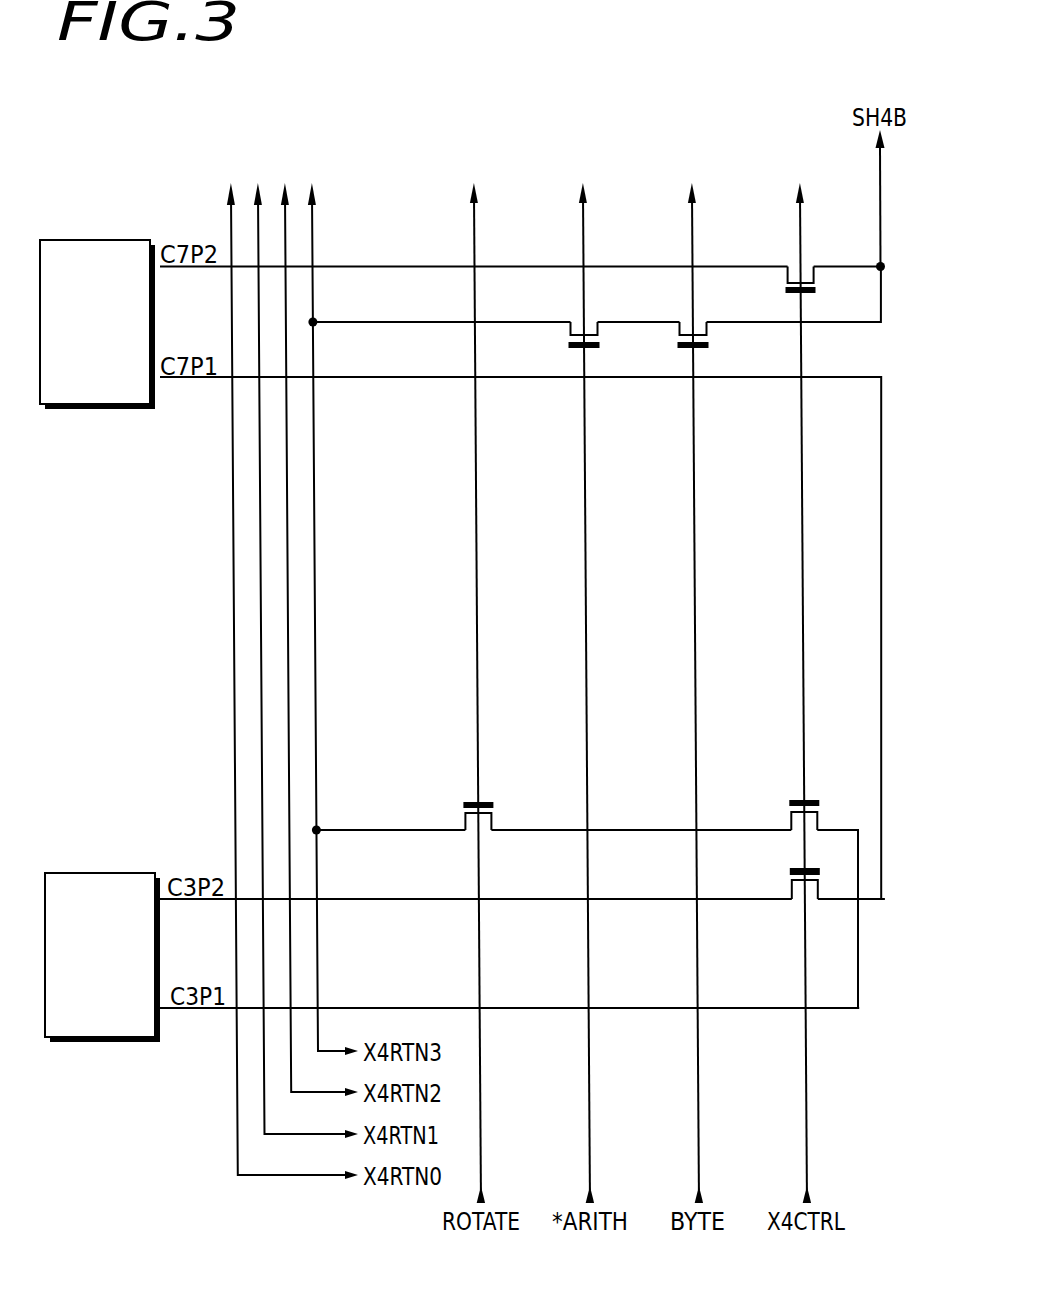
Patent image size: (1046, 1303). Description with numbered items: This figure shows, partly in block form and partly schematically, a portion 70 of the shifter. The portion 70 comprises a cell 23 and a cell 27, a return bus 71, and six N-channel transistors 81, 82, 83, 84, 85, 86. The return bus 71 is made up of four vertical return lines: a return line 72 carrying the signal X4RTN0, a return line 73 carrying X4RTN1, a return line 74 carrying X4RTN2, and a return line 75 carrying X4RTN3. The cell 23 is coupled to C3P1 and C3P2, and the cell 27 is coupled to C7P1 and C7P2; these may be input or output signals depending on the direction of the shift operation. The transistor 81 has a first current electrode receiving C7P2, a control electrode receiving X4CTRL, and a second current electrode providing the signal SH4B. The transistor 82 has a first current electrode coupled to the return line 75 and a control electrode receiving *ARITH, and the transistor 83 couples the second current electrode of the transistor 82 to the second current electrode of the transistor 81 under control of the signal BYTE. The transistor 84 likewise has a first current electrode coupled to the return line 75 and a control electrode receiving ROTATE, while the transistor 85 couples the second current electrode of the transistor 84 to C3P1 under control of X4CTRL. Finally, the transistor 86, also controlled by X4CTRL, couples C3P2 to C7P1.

The cell 23 is at (115, 970).
The cell 27 is at (110, 337).
The portion of shifter 70 is at (633, 67).
The return bus 71 is at (255, 681).
The return line 72 is at (232, 543).
The return line 73 is at (260, 598).
The return line 74 is at (288, 598).
The return line 75 is at (317, 543).
The N-channel transistor 81 is at (787, 278).
The N-channel transistor 82 is at (570, 334).
The N-channel transistor 83 is at (707, 334).
The N-channel transistor 84 is at (465, 820).
The N-channel transistor 85 is at (790, 818).
The N-channel transistor 86 is at (790, 887).